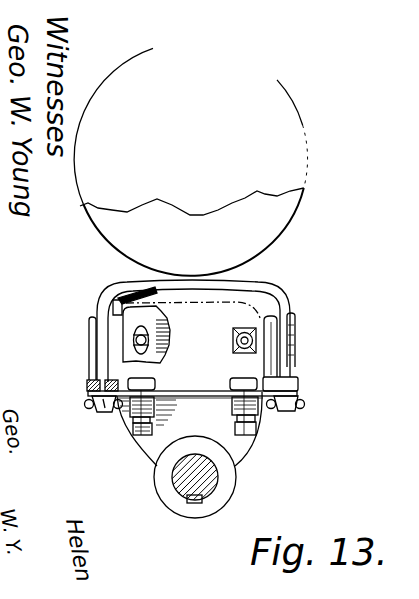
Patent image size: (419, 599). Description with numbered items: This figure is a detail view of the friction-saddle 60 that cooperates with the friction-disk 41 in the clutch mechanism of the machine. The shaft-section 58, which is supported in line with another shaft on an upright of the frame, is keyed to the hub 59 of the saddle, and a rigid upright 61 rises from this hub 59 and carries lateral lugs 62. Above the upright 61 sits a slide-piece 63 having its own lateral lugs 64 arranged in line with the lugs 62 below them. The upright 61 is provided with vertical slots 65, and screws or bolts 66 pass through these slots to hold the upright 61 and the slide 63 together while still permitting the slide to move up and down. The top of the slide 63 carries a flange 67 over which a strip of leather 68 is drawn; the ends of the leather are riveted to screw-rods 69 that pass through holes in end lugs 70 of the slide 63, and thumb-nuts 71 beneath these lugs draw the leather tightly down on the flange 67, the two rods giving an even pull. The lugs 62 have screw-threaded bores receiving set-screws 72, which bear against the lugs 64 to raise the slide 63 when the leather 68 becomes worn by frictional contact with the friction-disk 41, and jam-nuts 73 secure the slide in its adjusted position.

The friction-disk 41 is at (278, 230).
The shaft-section 58 is at (180, 494).
The hub 59 is at (228, 492).
The friction-saddle 60 is at (197, 503).
The rigid upright 61 is at (216, 419).
The lateral lugs 62 is at (262, 412).
The slide-piece 63 is at (192, 375).
The lateral lugs 64 is at (246, 373).
The vertical slots 65 is at (132, 322).
The screws or bolts 66 is at (240, 328).
The flange 67 is at (257, 293).
The strip of leather 68 is at (124, 291).
The screw-rods 69 is at (89, 369).
The end lugs 70 is at (86, 389).
The thumb-nuts 71 is at (100, 410).
The set-screws 72 is at (256, 432).
The jam-nuts 73 is at (158, 420).